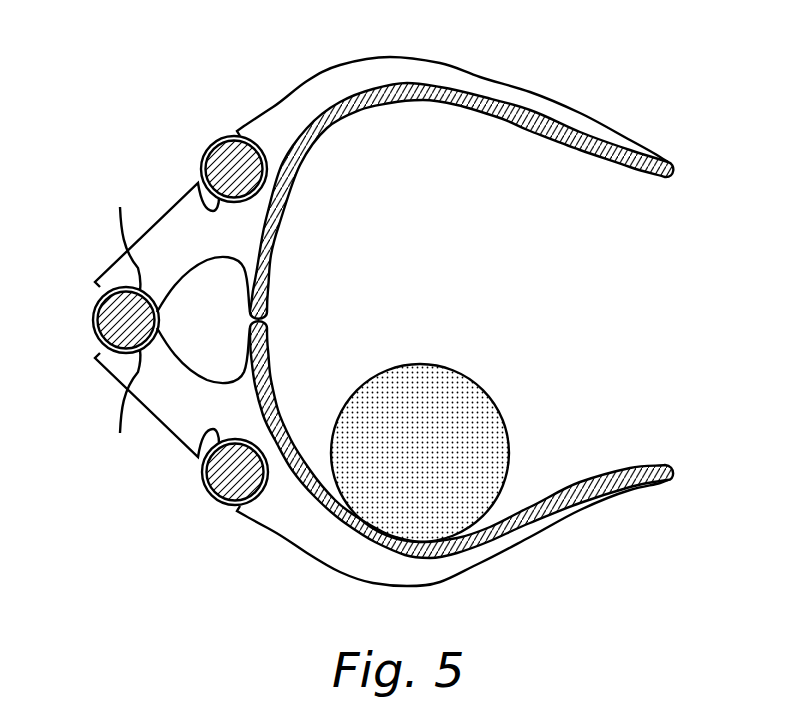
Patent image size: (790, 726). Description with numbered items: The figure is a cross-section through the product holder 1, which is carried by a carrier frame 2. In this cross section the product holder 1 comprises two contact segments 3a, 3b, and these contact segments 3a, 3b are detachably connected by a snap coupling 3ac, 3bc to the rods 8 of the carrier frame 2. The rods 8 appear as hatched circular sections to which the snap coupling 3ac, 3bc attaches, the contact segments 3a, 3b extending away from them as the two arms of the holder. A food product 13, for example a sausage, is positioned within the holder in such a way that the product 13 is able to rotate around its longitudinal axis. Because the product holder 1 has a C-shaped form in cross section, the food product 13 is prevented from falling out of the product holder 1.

The product holder 1 is at (690, 71).
The carrier frame 2 is at (78, 297).
The contact segment 3a is at (627, 172).
The contact segment 3b is at (628, 470).
The snap coupling 3ac is at (196, 184).
The snap coupling 3bc is at (196, 456).
The rod 8 is at (230, 162).
The food product 13 is at (418, 387).